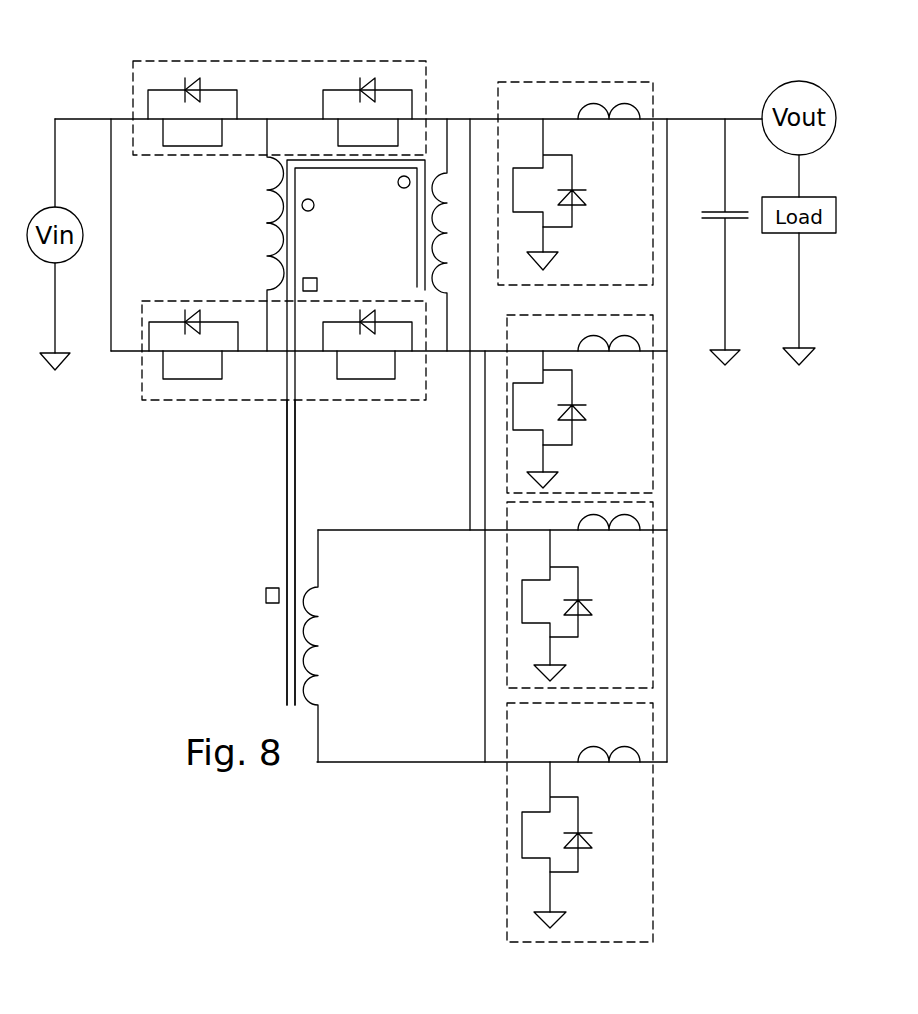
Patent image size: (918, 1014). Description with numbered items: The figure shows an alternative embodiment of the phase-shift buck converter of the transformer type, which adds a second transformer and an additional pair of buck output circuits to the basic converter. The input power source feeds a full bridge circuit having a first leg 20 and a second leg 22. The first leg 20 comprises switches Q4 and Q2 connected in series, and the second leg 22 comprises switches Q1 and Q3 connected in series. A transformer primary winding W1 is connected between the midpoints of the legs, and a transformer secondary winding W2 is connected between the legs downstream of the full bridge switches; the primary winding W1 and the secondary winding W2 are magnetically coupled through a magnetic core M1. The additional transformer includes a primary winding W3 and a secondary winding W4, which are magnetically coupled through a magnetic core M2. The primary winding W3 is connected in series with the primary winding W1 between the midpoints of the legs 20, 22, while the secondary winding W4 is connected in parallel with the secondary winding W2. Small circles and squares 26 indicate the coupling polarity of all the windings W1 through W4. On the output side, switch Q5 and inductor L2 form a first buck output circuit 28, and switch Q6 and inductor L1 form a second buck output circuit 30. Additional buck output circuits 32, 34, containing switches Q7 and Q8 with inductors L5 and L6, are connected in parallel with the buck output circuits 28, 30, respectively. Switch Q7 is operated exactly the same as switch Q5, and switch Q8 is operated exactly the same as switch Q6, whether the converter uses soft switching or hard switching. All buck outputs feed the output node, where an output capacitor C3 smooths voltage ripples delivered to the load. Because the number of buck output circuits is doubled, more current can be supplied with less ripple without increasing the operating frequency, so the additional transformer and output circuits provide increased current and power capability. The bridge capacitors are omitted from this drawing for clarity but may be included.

The first leg 20 is at (280, 61).
The second leg 22 is at (225, 400).
The small circles and squares 26 is at (308, 211).
The first buck output circuit 28 is at (535, 82).
The second buck output circuit 30 is at (655, 447).
The additional buck output circuit 32 is at (655, 822).
The additional buck output circuit 34 is at (655, 563).
The magnetic core M1 is at (336, 170).
The magnetic core M2 is at (297, 447).
The transformer primary winding W1 is at (270, 190).
The transformer secondary winding W2 is at (440, 268).
The primary winding W3 is at (268, 256).
The secondary winding W4 is at (322, 677).
The switch Q1 is at (193, 344).
The switch Q2 is at (367, 112).
The switch Q3 is at (367, 344).
The switch Q4 is at (192, 112).
The switch Q5 is at (549, 194).
The switch Q6 is at (549, 419).
The switch Q7 is at (557, 605).
The switch Q8 is at (557, 845).
The inductor L1 is at (607, 345).
The inductor L2 is at (607, 113).
The inductor L5 is at (607, 524).
The inductor L6 is at (607, 756).
The output capacitor C3 is at (710, 220).